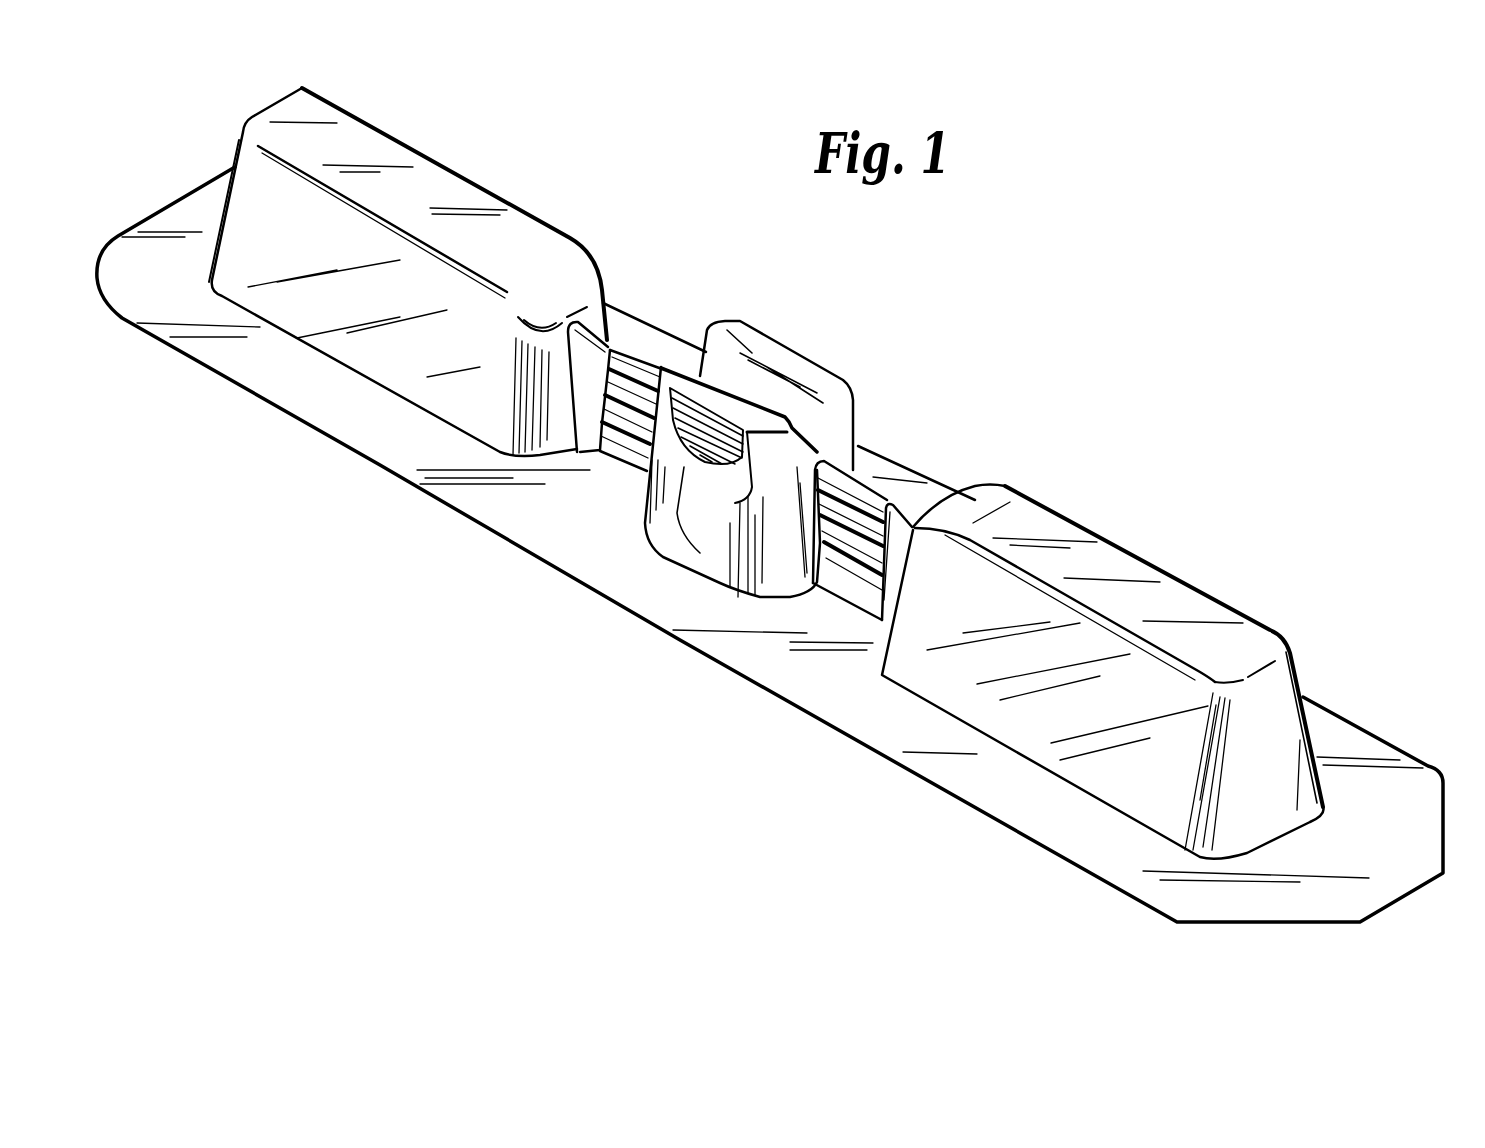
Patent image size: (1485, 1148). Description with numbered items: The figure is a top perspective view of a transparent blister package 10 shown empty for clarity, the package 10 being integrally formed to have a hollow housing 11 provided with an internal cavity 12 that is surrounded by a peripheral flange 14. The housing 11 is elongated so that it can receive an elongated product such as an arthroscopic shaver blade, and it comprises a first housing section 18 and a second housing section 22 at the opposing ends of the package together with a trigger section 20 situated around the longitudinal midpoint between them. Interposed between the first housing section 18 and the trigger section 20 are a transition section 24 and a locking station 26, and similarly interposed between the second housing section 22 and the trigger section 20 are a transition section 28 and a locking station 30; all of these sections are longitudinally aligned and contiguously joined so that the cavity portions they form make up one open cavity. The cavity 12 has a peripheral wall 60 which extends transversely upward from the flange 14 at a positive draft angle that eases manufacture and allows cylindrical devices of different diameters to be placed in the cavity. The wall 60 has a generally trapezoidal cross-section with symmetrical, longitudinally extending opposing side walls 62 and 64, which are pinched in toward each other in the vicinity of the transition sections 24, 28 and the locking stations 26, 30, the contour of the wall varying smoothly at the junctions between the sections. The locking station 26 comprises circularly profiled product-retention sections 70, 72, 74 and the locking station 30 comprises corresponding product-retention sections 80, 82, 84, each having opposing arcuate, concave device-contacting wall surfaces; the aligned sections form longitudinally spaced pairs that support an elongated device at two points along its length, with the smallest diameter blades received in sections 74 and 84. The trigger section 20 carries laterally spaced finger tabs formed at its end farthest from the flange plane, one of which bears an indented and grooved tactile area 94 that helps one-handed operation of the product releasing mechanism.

The blister package 10 is at (946, 439).
The hollow housing 11 is at (507, 198).
The internal cavity 12 is at (1130, 570).
The peripheral flange 14 is at (1051, 828).
The first housing section 18 is at (408, 272).
The trigger section 20 is at (754, 459).
The second housing section 22 is at (1102, 664).
The transition section 24 is at (587, 363).
The locking station 26 is at (563, 398).
The transition section 28 is at (893, 540).
The locking station 30 is at (844, 529).
The peripheral wall 60 is at (1110, 707).
The side wall 62 is at (583, 432).
The side wall 64 is at (917, 503).
The product-retention section 70 is at (600, 447).
The product-retention section 72 is at (637, 440).
The product-retention section 74 is at (650, 362).
The product-retention section 80 is at (870, 567).
The product-retention section 82 is at (840, 578).
The product-retention section 84 is at (817, 493).
The tactile area 94 is at (707, 443).